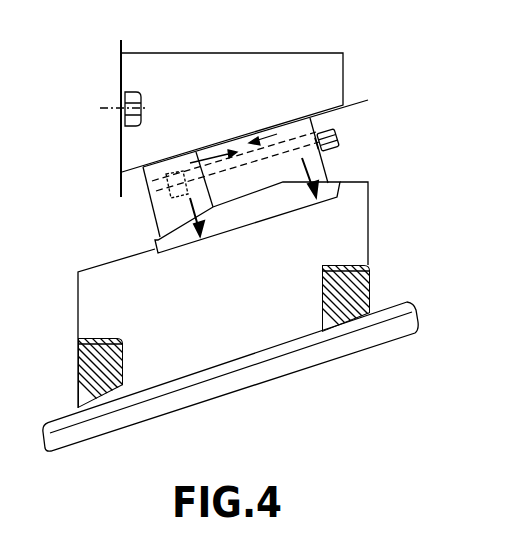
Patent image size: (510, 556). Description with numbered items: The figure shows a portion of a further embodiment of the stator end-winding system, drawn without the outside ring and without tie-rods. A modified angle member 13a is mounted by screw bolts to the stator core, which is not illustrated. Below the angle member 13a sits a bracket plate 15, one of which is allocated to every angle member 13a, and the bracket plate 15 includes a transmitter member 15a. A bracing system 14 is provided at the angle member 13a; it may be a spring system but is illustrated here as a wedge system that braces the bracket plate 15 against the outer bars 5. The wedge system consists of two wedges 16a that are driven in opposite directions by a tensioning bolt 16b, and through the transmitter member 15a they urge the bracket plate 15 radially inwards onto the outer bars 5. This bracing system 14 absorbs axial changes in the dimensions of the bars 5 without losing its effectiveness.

The angle member 13a is at (268, 76).
The bracing system 14 is at (338, 165).
The bracket plate 15 is at (353, 235).
The transmitter member 15a is at (342, 182).
The wedges 16a is at (170, 226).
The tensioning bolt 16b is at (338, 147).
The outer bars 5 is at (245, 375).